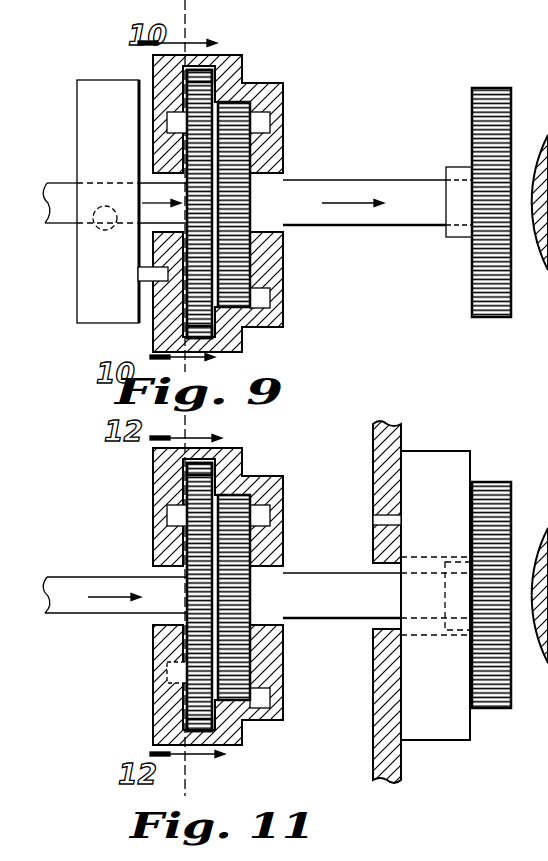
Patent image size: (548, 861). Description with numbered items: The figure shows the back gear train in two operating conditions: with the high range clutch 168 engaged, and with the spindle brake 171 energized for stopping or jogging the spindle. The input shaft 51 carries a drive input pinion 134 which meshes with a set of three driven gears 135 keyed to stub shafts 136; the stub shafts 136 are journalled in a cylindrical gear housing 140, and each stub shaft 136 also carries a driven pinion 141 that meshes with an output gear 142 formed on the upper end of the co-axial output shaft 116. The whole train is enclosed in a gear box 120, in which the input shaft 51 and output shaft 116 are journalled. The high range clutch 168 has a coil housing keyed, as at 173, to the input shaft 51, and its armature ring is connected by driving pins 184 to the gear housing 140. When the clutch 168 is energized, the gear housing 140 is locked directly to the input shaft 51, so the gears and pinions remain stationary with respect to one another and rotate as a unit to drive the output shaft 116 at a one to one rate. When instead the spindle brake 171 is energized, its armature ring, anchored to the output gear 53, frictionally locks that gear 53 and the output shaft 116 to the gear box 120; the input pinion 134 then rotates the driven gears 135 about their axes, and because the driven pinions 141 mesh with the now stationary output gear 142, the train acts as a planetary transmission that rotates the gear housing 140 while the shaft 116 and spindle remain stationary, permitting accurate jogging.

In FIG. 9, the input shaft 51 is at (65, 212).
In FIG. 11, the input shaft 51 is at (68, 590).
In FIG. 9, the output gear 53 is at (474, 122).
In FIG. 11, the output gear 53 is at (492, 490).
In FIG. 9, the output shaft 116 is at (401, 188).
In FIG. 11, the output shaft 116 is at (332, 581).
In FIG. 11, the gear box 120 is at (395, 775).
In FIG. 9, the drive input pinion 134 is at (205, 207).
In FIG. 11, the drive input pinion 134 is at (200, 590).
In FIG. 9, the driven gears 135 is at (212, 82).
In FIG. 11, the driven gears 135 is at (185, 480).
In FIG. 9, the stub shafts 136 is at (170, 124).
In FIG. 11, the stub shafts 136 is at (167, 512).
In FIG. 9, the gear housing 140 is at (278, 100).
In FIG. 11, the gear housing 140 is at (158, 467).
In FIG. 9, the driven pinions 141 is at (246, 118).
In FIG. 11, the driven pinions 141 is at (237, 502).
In FIG. 9, the output gear 142 is at (241, 198).
In FIG. 11, the output gear 142 is at (241, 593).
In FIG. 9, the high range clutch 168 is at (86, 130).
In FIG. 11, the spindle brake 171 is at (452, 450).
In FIG. 9, the key 173 is at (94, 229).
In FIG. 9, the driving pins 184 is at (157, 280).